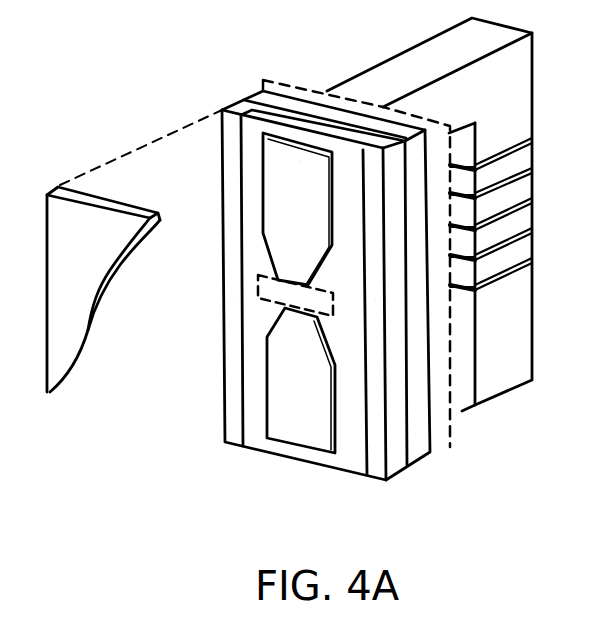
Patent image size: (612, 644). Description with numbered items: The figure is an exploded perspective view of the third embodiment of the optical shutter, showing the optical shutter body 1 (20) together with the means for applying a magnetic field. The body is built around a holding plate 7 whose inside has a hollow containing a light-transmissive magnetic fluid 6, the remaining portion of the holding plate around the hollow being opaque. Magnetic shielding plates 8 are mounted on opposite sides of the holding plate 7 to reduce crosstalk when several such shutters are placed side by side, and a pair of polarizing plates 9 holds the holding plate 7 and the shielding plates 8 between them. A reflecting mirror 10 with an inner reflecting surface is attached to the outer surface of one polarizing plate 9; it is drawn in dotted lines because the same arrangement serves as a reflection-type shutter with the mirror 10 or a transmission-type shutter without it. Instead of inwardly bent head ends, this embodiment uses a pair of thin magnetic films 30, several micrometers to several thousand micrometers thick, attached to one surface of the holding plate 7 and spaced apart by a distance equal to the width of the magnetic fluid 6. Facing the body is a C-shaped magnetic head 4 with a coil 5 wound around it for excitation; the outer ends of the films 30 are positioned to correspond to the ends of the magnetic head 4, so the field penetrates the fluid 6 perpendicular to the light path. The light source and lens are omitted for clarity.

The optical shutter body 1 is at (250, 90).
The optical shutter body 20 is at (295, 320).
The magnetic head 4 is at (515, 87).
The coil 5 is at (520, 178).
The light-transmissive magnetic fluid 6 is at (258, 292).
The holding plate 7 is at (345, 458).
The magnetic shielding plate 8 is at (233, 425).
The polarizing plate 9 is at (62, 380).
The reflecting mirror 10 is at (443, 442).
The thin magnetic film 30 is at (285, 190).